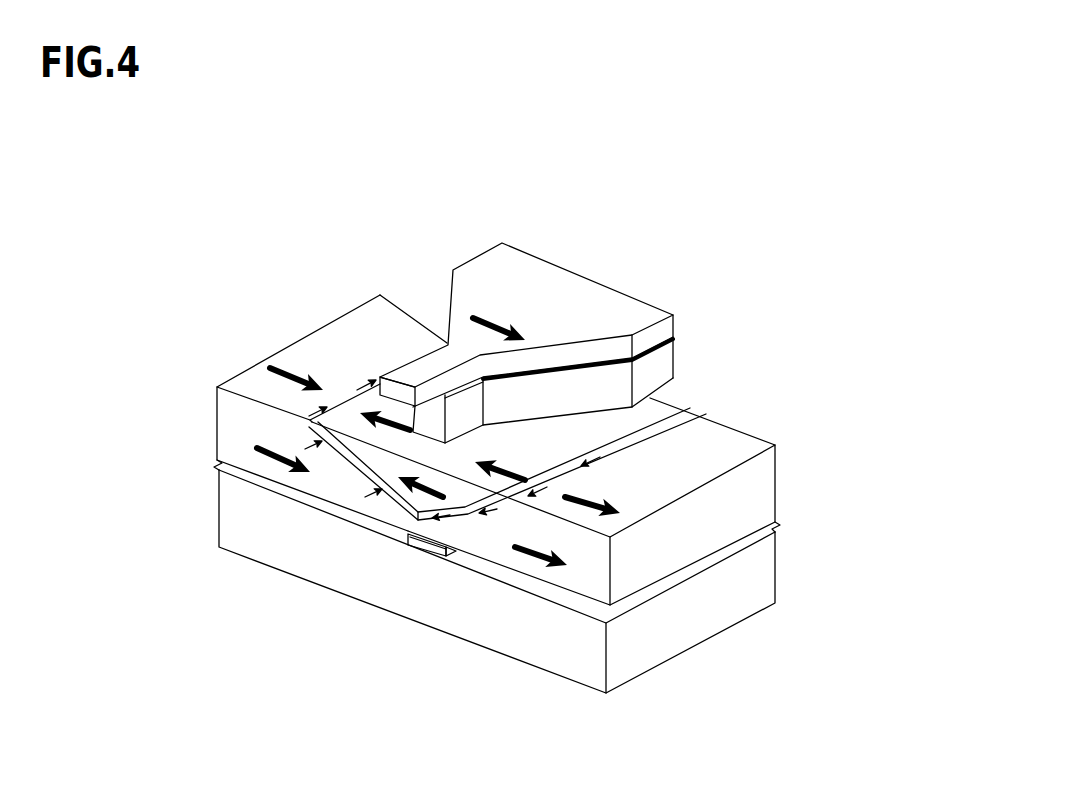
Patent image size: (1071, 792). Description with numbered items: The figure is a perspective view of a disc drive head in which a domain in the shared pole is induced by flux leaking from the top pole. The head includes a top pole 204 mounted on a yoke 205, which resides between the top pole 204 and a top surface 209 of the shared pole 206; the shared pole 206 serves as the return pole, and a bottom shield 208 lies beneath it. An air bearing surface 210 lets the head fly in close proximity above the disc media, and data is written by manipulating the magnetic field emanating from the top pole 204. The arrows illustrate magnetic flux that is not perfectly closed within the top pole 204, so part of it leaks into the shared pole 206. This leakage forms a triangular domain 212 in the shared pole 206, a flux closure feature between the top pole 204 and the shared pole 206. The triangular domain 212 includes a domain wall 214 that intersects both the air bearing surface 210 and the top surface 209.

The top pole 204 is at (685, 308).
The yoke 205 is at (688, 342).
The shared pole 206 is at (788, 464).
The bottom shield 208 is at (788, 564).
The top surface 209 is at (681, 483).
The air bearing surface 210 is at (232, 438).
The triangular domain 212 is at (356, 462).
The domain wall 214 is at (688, 412).